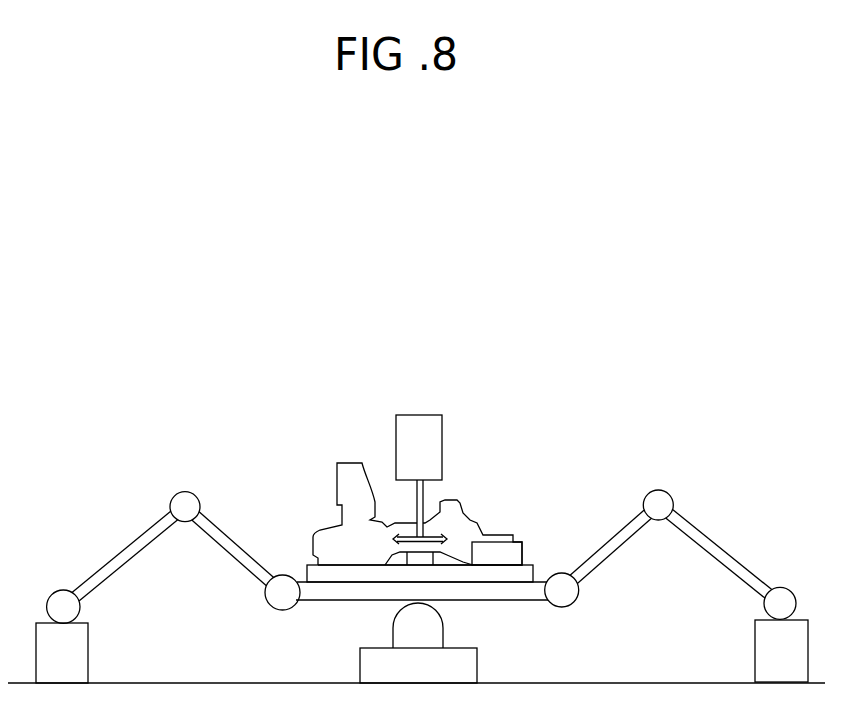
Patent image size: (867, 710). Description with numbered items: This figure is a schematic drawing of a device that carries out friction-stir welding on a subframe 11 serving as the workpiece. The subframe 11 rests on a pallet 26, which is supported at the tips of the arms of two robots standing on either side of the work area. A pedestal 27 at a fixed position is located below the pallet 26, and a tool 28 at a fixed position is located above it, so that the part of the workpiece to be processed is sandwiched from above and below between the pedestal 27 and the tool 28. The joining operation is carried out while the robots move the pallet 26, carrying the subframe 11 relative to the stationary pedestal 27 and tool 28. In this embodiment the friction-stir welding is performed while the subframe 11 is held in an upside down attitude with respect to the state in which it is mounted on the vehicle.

The subframe 11 is at (476, 524).
The pallet 26 is at (479, 592).
The pedestal 27 is at (407, 617).
The tool 28 is at (423, 496).